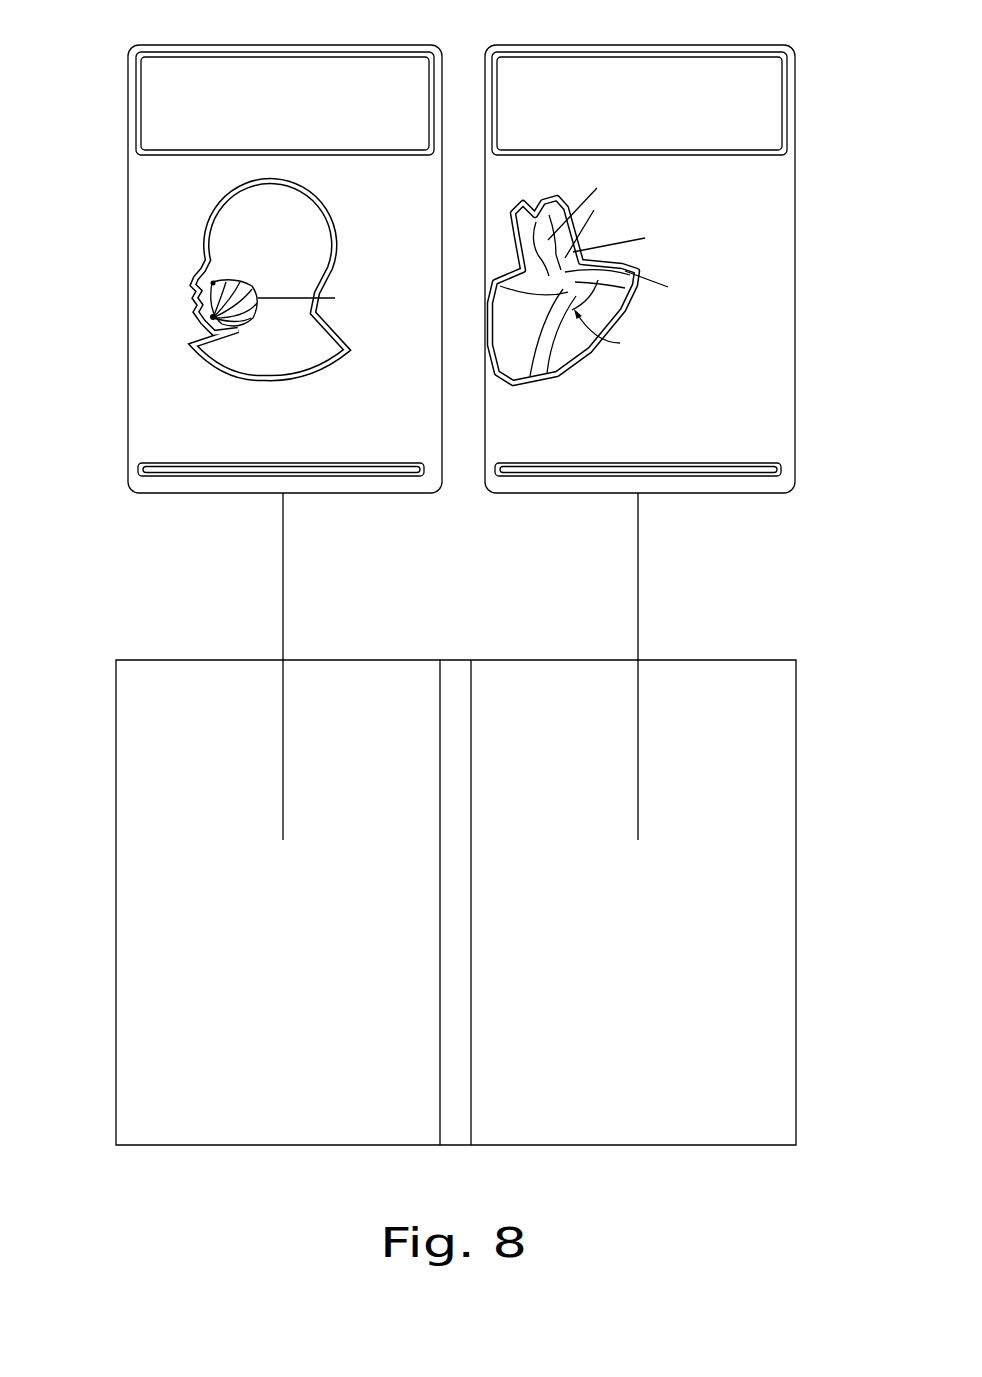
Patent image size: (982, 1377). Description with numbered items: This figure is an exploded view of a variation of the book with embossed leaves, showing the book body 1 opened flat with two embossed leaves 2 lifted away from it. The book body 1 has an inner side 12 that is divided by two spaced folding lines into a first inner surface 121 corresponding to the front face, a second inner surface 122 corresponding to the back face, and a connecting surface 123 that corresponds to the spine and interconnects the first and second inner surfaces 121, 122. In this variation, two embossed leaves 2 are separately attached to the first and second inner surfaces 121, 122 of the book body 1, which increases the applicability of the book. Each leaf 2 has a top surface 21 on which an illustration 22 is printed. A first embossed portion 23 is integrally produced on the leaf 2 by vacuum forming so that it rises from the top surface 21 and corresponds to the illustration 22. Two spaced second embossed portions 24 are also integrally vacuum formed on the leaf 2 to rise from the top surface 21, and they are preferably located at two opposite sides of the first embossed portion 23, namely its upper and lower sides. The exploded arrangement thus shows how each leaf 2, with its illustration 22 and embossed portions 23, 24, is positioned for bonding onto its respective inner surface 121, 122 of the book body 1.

The book body 1 is at (467, 624).
The inner side 12 is at (504, 899).
The first inner surface 121 is at (245, 670).
The second inner surface 122 is at (731, 736).
The connecting surface 123 is at (457, 1113).
The leaf 2 is at (458, 283).
The top surface 21 is at (363, 172).
The illustration 22 is at (248, 252).
The first embossed portion 23 is at (208, 217).
The second embossed portion 24 is at (147, 115).